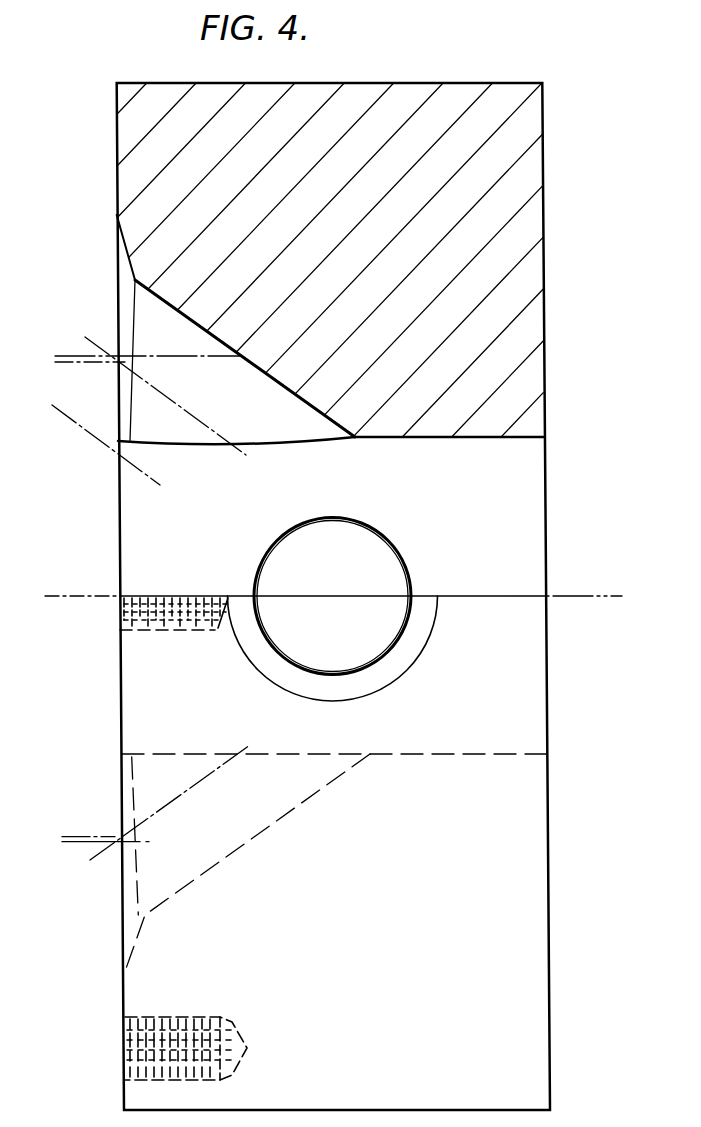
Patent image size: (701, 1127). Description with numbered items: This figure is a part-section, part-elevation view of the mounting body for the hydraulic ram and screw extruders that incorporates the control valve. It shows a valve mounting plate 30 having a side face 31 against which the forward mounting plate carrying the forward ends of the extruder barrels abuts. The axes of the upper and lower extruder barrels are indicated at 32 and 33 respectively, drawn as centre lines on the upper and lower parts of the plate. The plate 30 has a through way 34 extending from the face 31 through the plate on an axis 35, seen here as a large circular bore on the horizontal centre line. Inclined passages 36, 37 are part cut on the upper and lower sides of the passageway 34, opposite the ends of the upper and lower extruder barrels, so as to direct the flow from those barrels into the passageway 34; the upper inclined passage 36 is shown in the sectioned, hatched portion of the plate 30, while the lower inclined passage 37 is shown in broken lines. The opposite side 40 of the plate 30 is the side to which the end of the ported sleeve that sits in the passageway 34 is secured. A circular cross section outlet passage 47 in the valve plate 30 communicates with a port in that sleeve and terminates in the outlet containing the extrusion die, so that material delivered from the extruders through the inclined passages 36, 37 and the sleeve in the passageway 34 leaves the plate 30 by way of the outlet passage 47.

The valve mounting plate 30 is at (510, 192).
The side face 31 is at (117, 181).
The axis of upper extruder barrel 32 is at (69, 355).
The axis of lower extruder barrel 33 is at (85, 836).
The through way 34 is at (521, 438).
The axis 35 is at (590, 595).
The inclined passage 36 is at (238, 357).
The inclined passage 37 is at (253, 840).
The side of plate 40 is at (543, 275).
The outlet passage 47 is at (394, 646).